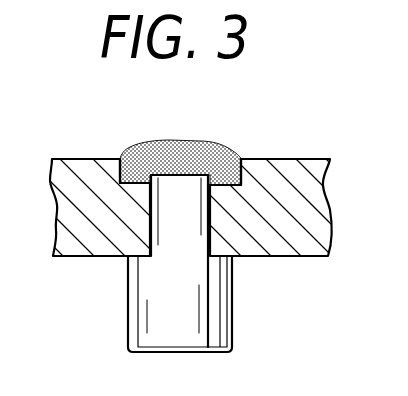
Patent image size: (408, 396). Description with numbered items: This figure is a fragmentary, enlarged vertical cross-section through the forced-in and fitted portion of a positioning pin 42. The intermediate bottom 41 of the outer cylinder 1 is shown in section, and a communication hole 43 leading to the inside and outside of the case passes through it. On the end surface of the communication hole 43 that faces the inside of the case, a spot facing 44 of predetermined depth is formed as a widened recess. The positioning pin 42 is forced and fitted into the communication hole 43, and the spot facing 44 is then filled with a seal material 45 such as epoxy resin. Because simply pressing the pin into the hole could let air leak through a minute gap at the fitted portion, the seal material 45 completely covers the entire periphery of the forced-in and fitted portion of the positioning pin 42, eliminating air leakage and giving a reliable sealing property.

The outer cylinder 1 is at (77, 266).
The intermediate bottom 41 is at (303, 235).
The positioning pin 42 is at (225, 328).
The communication hole 43 is at (207, 226).
The spot facing 44 is at (127, 152).
The seal material 45 is at (225, 147).